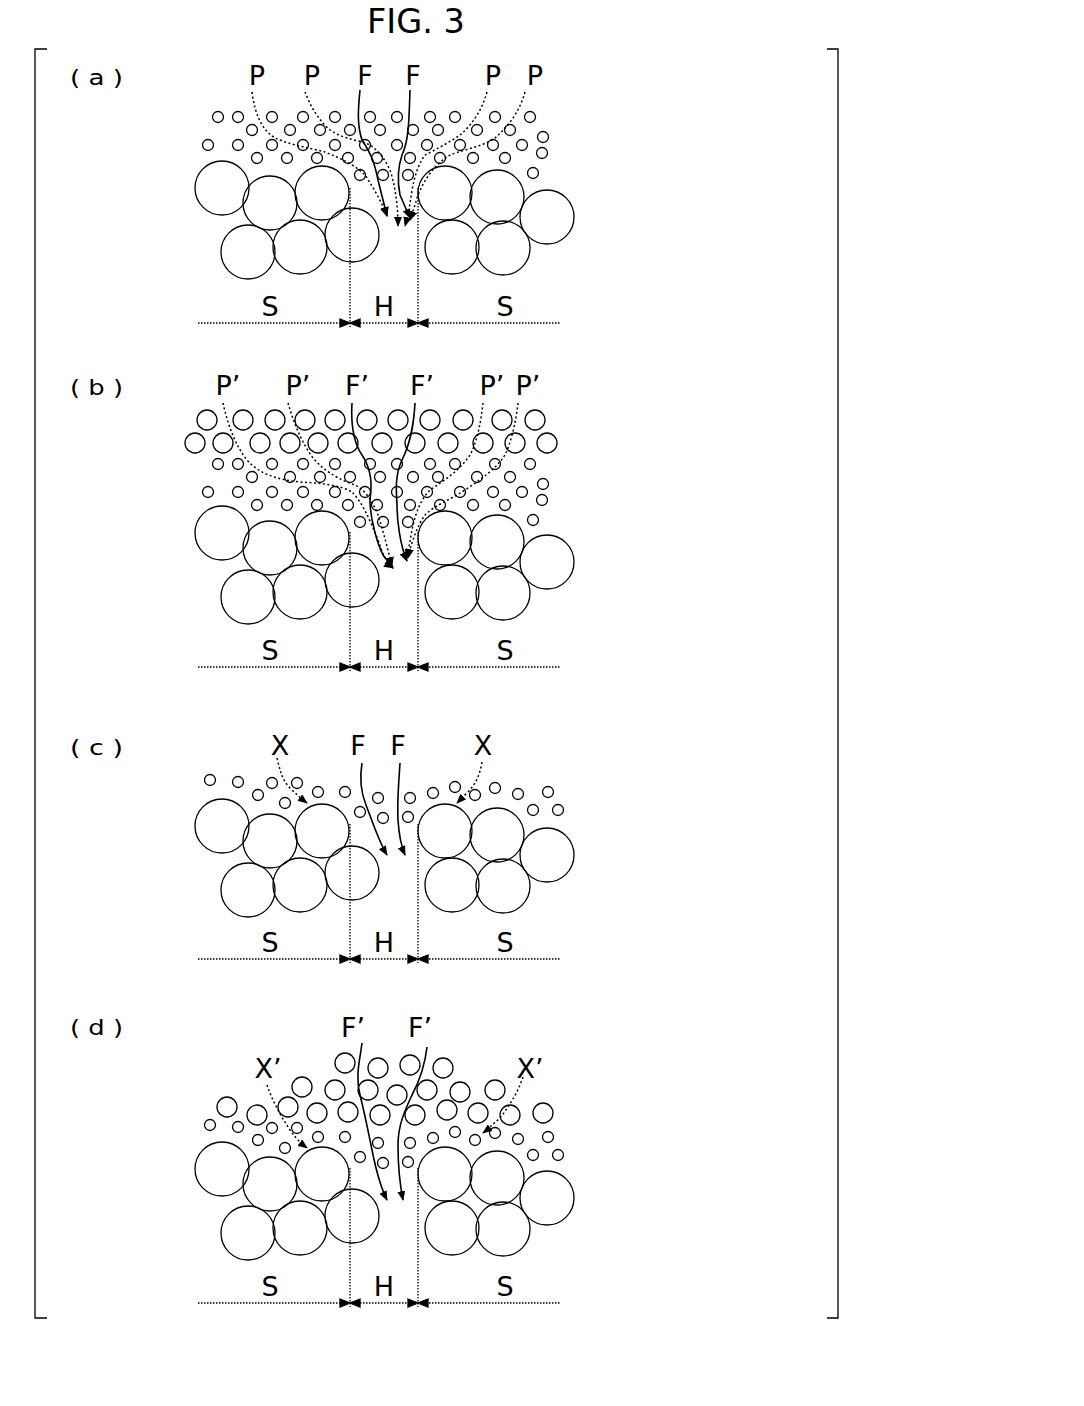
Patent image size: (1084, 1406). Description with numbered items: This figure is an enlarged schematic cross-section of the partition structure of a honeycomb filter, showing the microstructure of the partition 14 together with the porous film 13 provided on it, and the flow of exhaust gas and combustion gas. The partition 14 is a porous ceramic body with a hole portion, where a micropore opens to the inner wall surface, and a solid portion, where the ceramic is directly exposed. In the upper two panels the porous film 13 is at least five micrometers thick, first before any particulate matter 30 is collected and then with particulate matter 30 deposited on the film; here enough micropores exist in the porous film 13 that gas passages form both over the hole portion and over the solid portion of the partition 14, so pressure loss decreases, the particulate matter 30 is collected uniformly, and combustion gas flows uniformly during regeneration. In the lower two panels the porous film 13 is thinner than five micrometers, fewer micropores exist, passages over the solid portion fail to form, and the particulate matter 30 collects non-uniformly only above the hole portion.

The porous film 13 is at (591, 120).
The partition 14 is at (591, 182).
The particulate matter 30 is at (591, 1122).